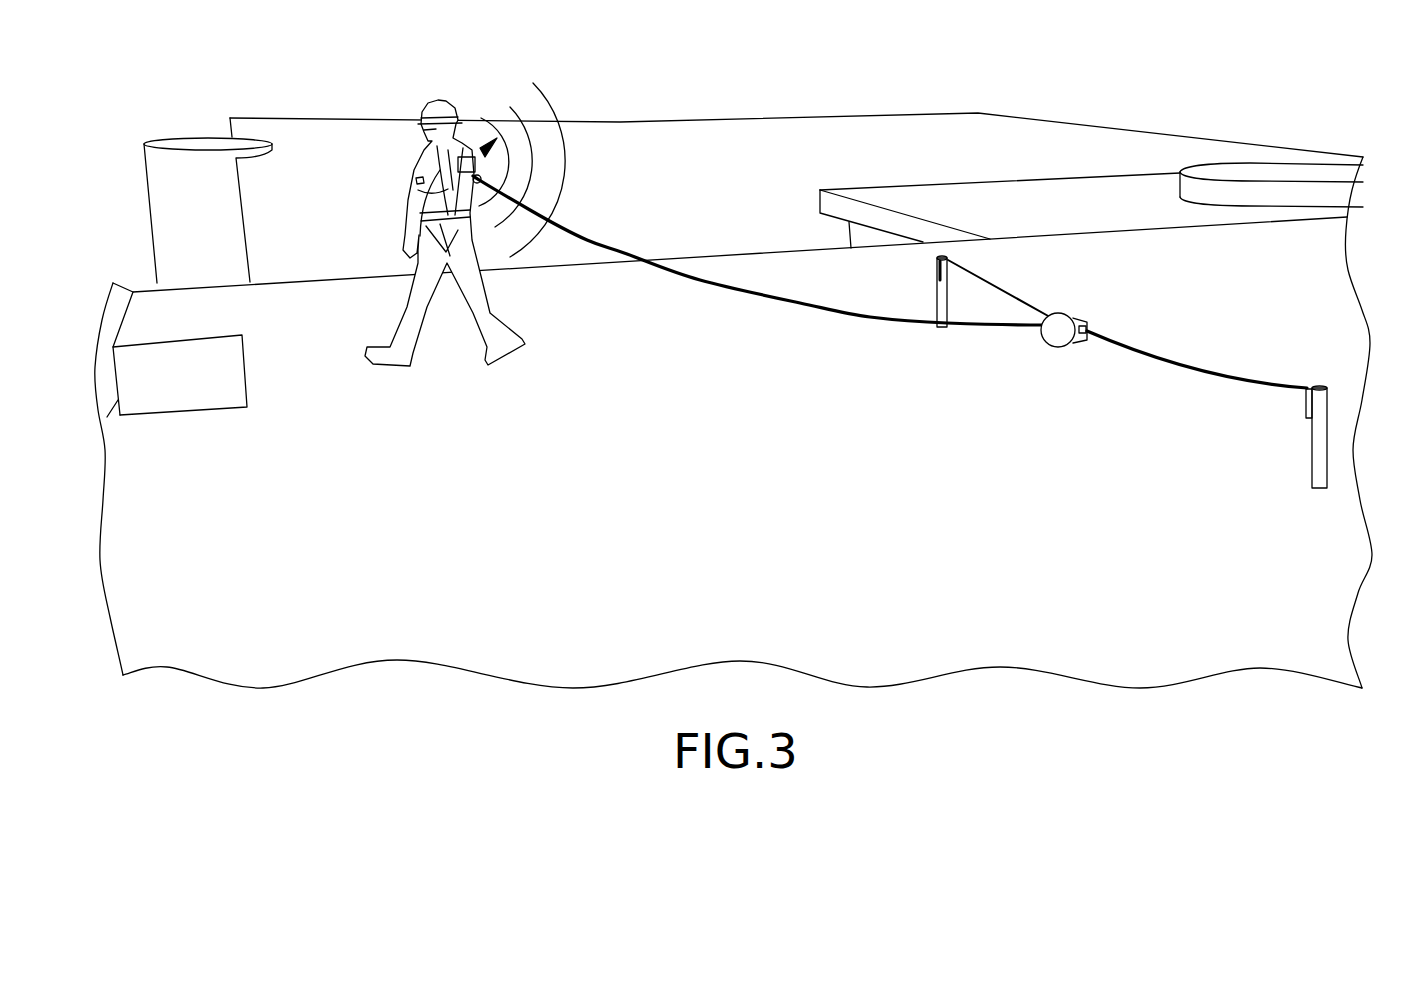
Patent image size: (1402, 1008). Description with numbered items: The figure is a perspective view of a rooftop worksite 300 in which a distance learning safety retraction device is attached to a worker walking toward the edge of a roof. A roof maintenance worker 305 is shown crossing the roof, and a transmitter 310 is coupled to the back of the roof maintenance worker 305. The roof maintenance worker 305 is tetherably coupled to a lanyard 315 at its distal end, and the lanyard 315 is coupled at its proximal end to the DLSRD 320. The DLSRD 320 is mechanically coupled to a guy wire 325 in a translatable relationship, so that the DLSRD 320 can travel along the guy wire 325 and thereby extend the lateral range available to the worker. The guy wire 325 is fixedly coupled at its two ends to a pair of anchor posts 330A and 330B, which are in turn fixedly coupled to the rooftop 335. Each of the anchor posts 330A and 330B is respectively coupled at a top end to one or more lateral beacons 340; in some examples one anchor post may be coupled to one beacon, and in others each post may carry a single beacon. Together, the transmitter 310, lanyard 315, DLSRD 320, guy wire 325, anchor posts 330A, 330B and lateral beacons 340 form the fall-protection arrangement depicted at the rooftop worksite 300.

The rooftop worksite 300 is at (1116, 581).
The roof maintenance worker 305 is at (417, 265).
The transmitter 310 is at (486, 147).
The lanyard 315 is at (588, 240).
The DLSRD 320 is at (1063, 311).
The guy wire 325 is at (1152, 355).
The anchor post 330A is at (937, 301).
The anchor post 330B is at (1313, 442).
The rooftop 335 is at (941, 486).
The lateral beacon 340 is at (1306, 402).